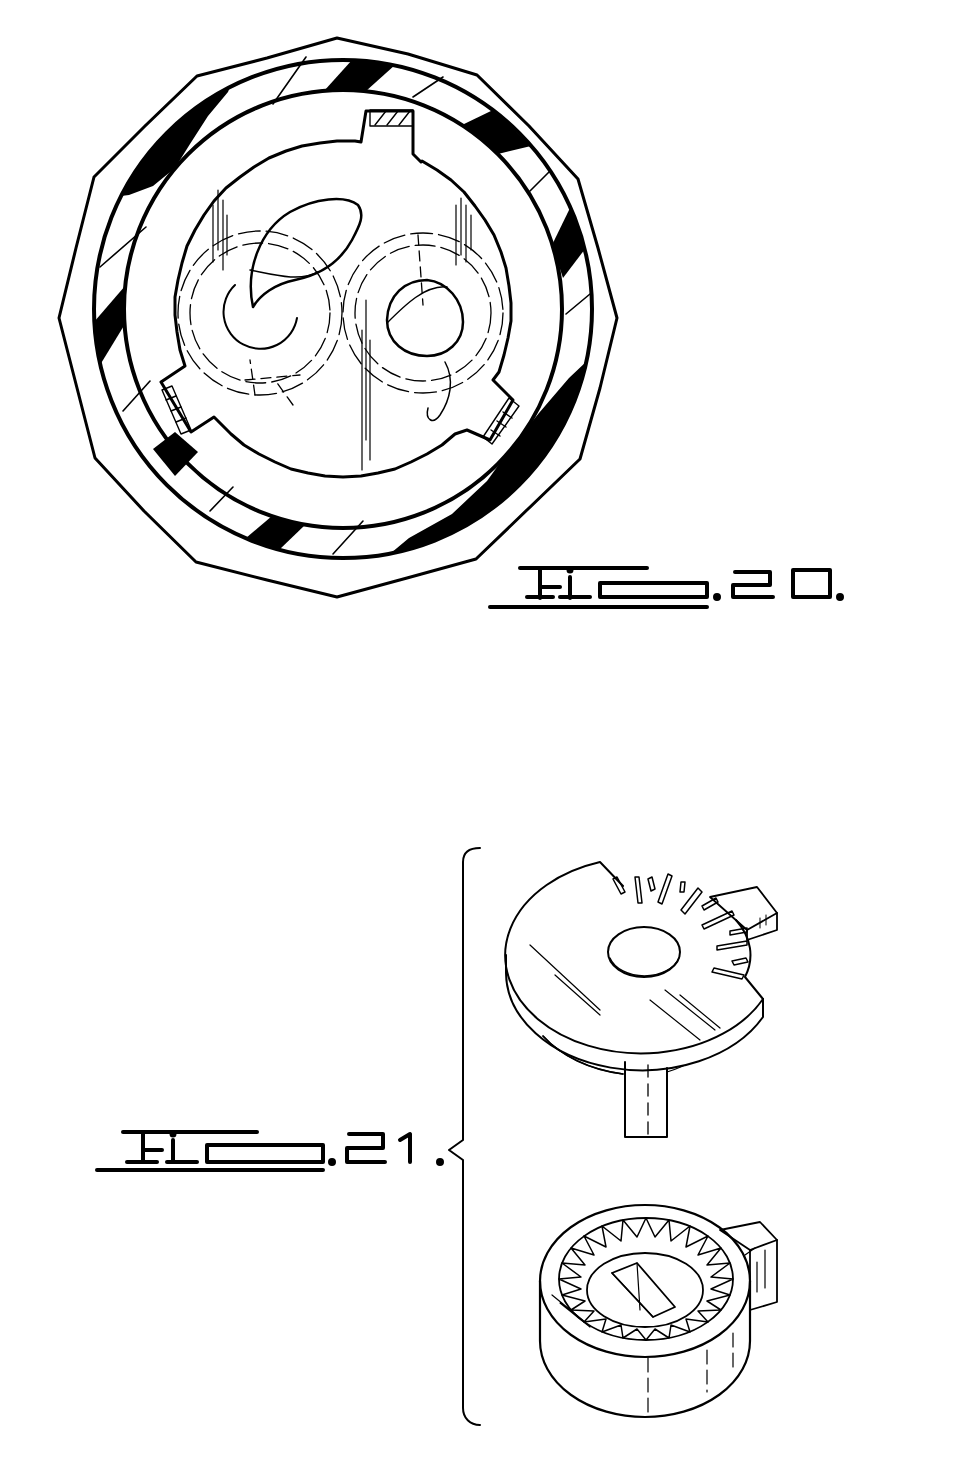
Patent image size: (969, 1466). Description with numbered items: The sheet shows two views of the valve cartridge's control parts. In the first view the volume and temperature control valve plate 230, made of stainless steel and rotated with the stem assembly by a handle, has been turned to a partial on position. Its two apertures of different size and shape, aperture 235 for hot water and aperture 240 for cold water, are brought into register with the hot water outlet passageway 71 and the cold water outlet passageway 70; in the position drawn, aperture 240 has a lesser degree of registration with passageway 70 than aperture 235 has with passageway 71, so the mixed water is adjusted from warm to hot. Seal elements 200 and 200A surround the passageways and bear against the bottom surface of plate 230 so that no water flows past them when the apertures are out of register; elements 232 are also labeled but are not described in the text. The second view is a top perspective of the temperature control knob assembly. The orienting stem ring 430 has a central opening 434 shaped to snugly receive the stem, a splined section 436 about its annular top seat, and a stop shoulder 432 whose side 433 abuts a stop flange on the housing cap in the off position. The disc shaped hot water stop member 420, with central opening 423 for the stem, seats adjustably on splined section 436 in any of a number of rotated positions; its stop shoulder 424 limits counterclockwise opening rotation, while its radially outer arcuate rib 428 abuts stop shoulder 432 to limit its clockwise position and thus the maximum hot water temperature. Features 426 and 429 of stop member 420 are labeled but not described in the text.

In FIG. 20, the cold water outlet passageway 70 is at (428, 236).
In FIG. 20, the hot water outlet passageway 71 is at (285, 385).
In FIG. 20, the seal element 200 is at (268, 428).
In FIG. 20, the seal element 200A is at (500, 350).
In FIG. 20, the volume and temperature control valve plate 230 is at (420, 170).
In FIG. 20, the locking key 232 is at (400, 118).
In FIG. 20, the aperture 235 is at (314, 200).
In FIG. 20, the aperture 240 is at (421, 369).
In FIG. 21, the hot water stop member 420 is at (770, 1012).
In FIG. 21, the central opening 423 is at (634, 953).
In FIG. 21, the stop shoulder 424 is at (668, 1110).
In FIG. 21, the tab 426 is at (770, 905).
In FIG. 21, the arcuate rib 428 is at (590, 1063).
In FIG. 21, the ribs 429 is at (703, 890).
In FIG. 21, the orienting stem ring 430 is at (737, 1383).
In FIG. 21, the stop shoulder 432 is at (780, 1258).
In FIG. 21, the side 433 is at (767, 1270).
In FIG. 21, the central opening 434 is at (640, 1283).
In FIG. 21, the splined section 436 is at (720, 1300).